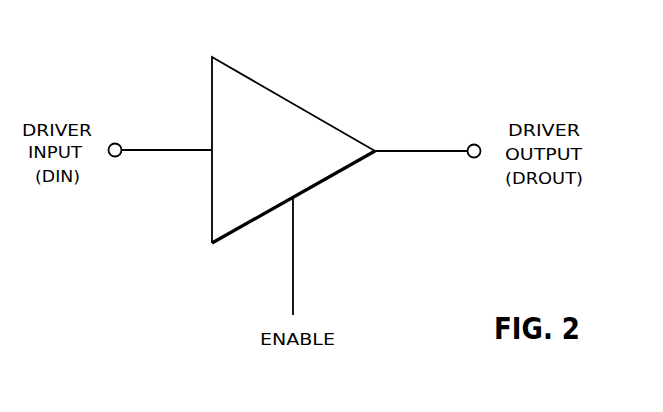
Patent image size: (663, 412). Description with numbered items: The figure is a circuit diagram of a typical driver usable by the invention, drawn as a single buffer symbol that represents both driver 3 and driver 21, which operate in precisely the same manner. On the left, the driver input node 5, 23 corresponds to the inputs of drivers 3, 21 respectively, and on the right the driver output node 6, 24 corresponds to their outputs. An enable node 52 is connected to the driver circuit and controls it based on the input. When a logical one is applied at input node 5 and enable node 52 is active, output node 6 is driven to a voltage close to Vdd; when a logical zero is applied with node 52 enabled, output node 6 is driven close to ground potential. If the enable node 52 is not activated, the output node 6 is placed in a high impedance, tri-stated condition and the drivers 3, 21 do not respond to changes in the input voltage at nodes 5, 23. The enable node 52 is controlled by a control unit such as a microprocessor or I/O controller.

The driver 3 is at (220, 136).
The driver 21 is at (108, 50).
The input node 5 is at (161, 187).
The input node 23 is at (168, 151).
The output node 6 is at (428, 188).
The output node 24 is at (420, 152).
The enable node 52 is at (293, 270).